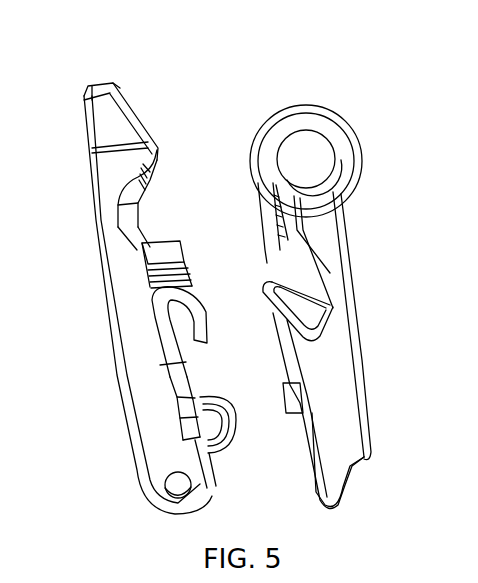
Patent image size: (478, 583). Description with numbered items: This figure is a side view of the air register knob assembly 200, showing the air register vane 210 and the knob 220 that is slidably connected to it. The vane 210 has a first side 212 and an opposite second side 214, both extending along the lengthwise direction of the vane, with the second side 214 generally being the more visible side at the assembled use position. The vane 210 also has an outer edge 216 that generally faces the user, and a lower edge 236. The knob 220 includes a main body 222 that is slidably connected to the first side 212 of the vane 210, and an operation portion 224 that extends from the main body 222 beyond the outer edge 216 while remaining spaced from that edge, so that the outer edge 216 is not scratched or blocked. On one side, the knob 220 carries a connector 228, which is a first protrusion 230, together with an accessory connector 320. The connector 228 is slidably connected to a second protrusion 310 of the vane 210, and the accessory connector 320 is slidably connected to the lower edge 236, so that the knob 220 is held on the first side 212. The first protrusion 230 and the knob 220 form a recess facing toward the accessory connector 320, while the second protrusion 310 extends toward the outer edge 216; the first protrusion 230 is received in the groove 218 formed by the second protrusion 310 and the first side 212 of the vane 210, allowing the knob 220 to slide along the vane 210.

The air register knob assembly 200 is at (305, 61).
The air register vane 210 is at (332, 112).
The first side 212 is at (262, 201).
The second side 214 is at (348, 258).
The outer edge 216 is at (368, 138).
The groove 218 is at (336, 306).
The knob 220 is at (125, 88).
The main body 222 is at (102, 252).
The operation portion 224 is at (146, 122).
The connector 228 is at (207, 293).
The first protrusion 230 is at (199, 343).
The lower edge 236 is at (337, 496).
The second protrusion 310 is at (265, 327).
The accessory connector 320 is at (230, 457).